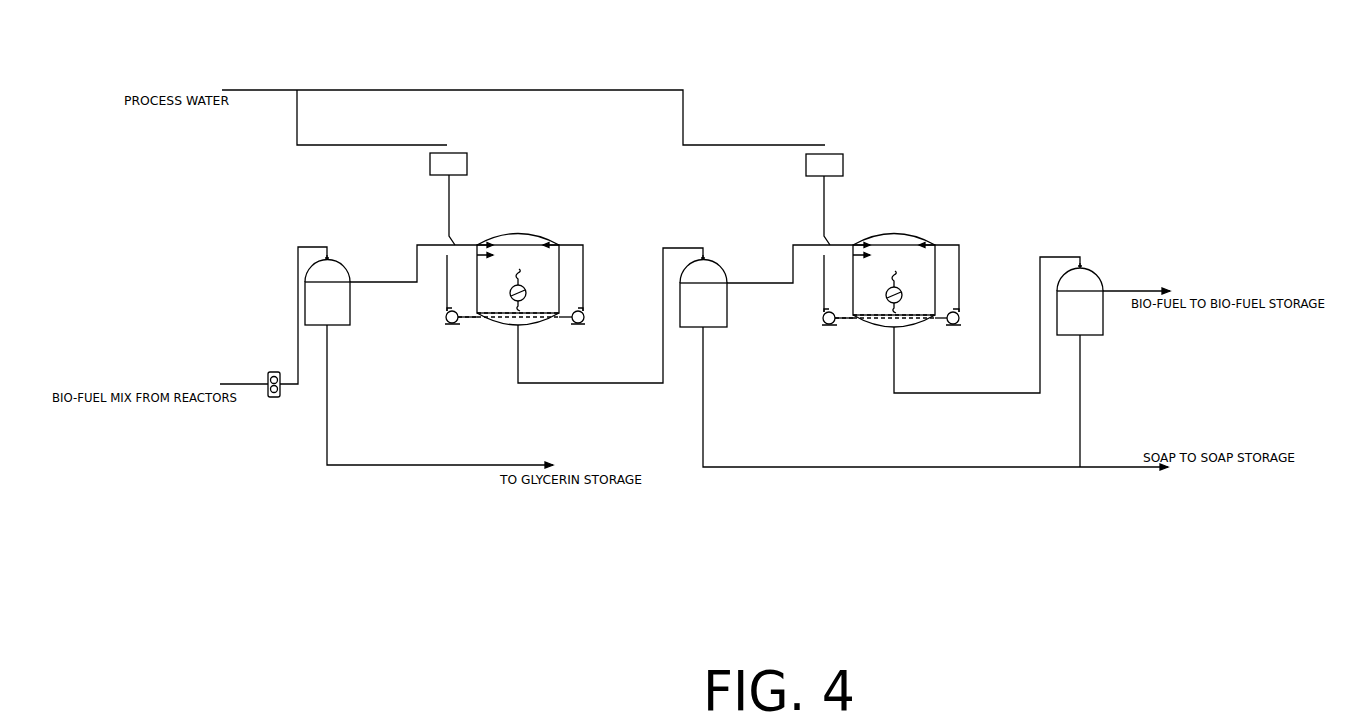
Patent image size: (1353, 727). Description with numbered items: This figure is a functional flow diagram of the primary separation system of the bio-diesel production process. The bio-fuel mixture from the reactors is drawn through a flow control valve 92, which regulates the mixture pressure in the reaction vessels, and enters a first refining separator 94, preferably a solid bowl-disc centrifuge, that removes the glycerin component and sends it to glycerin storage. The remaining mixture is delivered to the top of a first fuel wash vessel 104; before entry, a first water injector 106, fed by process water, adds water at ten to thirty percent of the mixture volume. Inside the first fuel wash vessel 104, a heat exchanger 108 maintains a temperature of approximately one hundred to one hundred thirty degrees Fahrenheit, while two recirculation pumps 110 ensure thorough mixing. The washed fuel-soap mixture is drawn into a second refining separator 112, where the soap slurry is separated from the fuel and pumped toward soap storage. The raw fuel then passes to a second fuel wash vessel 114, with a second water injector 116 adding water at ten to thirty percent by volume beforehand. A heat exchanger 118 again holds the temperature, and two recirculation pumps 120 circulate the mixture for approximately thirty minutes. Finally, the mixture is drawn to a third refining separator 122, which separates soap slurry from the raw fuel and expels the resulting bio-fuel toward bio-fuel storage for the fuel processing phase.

The flow control valve 92 is at (273, 398).
The first refining separator 94 is at (322, 313).
The first fuel wash vessel 104 is at (515, 327).
The first water injector 106 is at (447, 164).
The heat exchanger 108 is at (511, 297).
The recirculation pumps 110 is at (446, 321).
The second refining separator 112 is at (695, 318).
The second fuel wash vessel 114 is at (890, 327).
The second water injector 116 is at (825, 163).
The heat exchanger 118 is at (887, 299).
The recirculation pumps 120 is at (823, 321).
The third refining separator 122 is at (1066, 325).